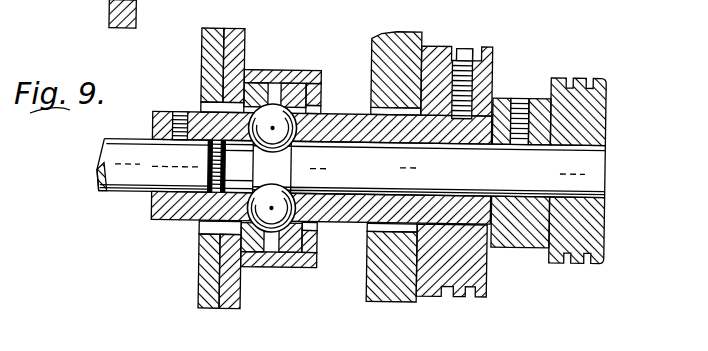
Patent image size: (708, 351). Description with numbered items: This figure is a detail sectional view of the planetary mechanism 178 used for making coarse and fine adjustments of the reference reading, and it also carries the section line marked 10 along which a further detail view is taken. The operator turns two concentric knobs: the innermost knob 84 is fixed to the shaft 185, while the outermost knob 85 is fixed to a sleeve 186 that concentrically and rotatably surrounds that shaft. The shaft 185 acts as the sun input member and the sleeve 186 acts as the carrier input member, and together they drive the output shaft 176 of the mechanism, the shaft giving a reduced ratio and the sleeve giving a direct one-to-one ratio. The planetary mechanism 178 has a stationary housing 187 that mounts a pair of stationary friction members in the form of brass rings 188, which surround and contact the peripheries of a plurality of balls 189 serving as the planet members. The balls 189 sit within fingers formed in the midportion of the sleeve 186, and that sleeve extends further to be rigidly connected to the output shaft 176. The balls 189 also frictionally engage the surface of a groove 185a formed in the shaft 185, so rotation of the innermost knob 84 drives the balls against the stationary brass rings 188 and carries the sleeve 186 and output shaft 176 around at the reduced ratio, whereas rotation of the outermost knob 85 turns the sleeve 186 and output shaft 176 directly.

The output shaft 176 is at (122, 192).
The shaft 185 is at (582, 168).
The groove 185a is at (270, 190).
The balls 189 is at (277, 146).
The planetary mechanism 178 is at (301, 68).
The stationary housing 187 is at (313, 86).
The brass rings 188 is at (294, 249).
The sleeve 186 is at (346, 216).
The outermost knob 85 is at (491, 62).
The innermost knob 84 is at (598, 106).
The section line 10- 10 is at (272, 62).